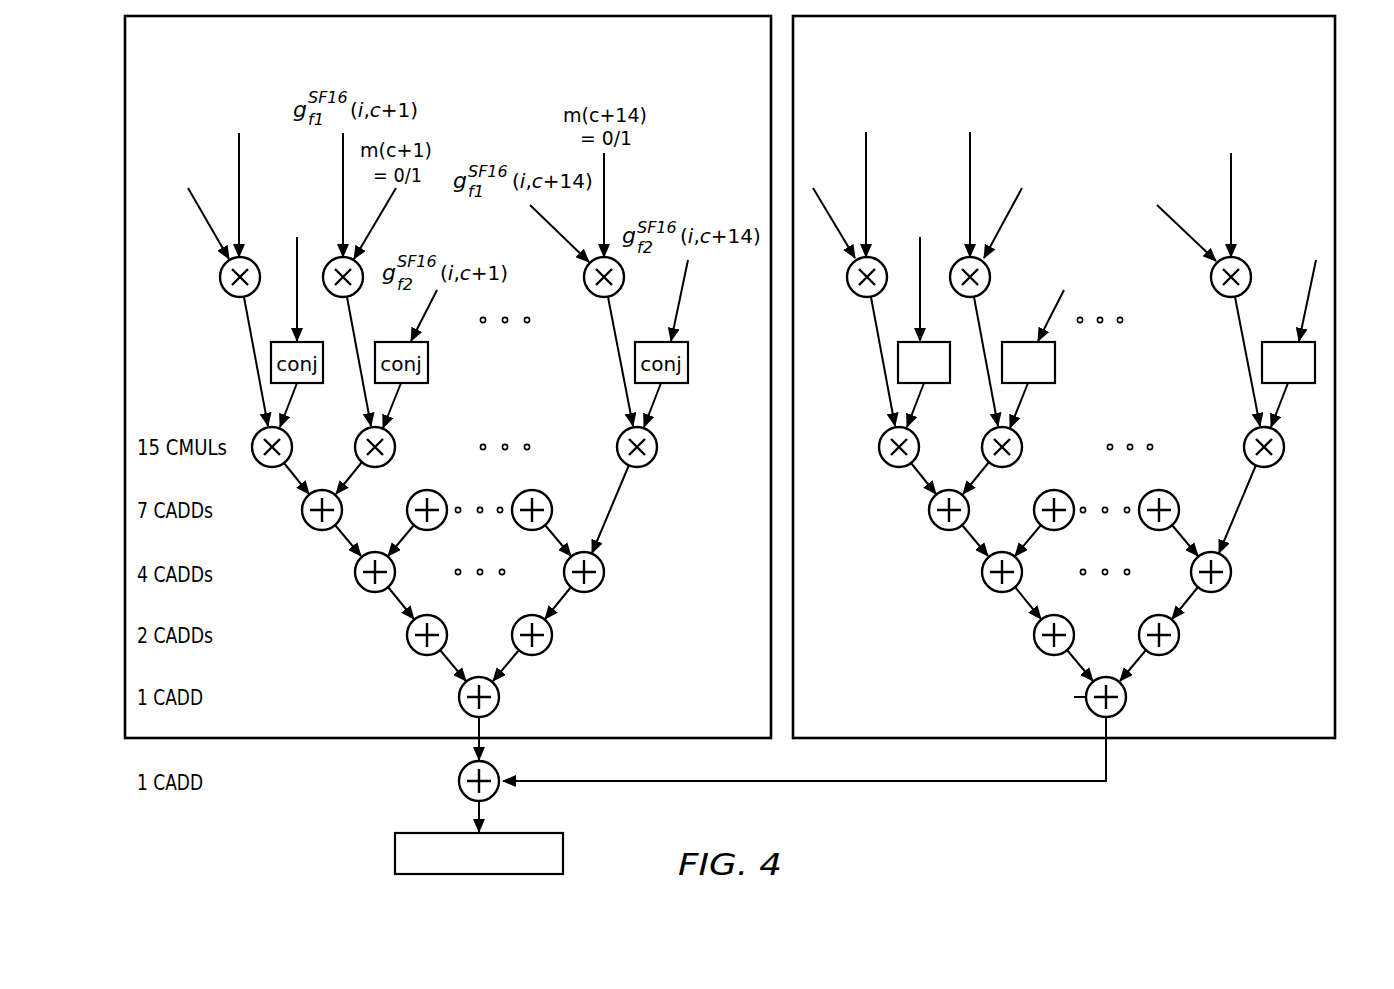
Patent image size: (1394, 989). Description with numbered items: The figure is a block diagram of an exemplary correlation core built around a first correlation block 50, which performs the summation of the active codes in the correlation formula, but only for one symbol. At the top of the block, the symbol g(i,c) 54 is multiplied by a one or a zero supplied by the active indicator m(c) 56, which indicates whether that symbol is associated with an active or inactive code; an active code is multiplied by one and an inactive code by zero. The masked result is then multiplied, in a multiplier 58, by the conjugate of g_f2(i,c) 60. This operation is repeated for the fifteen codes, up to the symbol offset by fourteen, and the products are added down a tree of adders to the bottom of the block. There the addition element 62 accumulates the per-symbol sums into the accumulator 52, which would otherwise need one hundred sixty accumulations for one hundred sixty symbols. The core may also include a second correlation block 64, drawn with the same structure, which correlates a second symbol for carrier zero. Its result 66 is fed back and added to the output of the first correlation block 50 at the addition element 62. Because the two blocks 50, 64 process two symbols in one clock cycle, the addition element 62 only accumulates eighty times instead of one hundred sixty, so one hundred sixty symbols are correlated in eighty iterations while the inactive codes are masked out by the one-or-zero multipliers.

The first correlation block 50 is at (285, 741).
The accumulator 52 is at (395, 853).
The symbol g(i,c) 54 is at (190, 140).
The active indicator m(c) 56 is at (238, 78).
The multiplier 58 is at (272, 468).
The conjugate of g_f2(i,c) 60 is at (297, 190).
The addition element 62 is at (459, 778).
The second correlation block 64 is at (1185, 741).
The result 66 is at (810, 782).